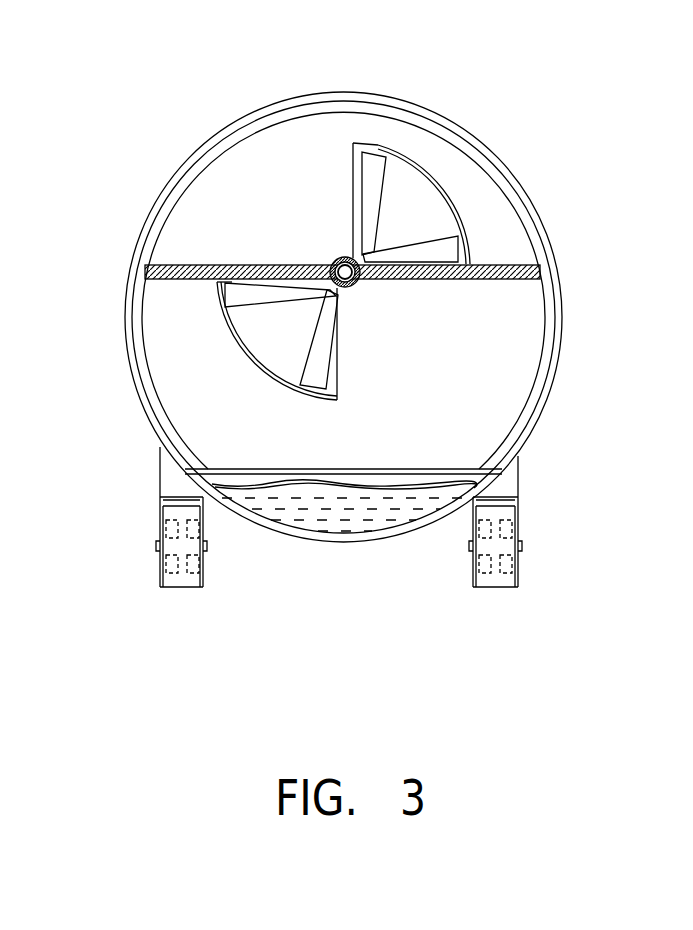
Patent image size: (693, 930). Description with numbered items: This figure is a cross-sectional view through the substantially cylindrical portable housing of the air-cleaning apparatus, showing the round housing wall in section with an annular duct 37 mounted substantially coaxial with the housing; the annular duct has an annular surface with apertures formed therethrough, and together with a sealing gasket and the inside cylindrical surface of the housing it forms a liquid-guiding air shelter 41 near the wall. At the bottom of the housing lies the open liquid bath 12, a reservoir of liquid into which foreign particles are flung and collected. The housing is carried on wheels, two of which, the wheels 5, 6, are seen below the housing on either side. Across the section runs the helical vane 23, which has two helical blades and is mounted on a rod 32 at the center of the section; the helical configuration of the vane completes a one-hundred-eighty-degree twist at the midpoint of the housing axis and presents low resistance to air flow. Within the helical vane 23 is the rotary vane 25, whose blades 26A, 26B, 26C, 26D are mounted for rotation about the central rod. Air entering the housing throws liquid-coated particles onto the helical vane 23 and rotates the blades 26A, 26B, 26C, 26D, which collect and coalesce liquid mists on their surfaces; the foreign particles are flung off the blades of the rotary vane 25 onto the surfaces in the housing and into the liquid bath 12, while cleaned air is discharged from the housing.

The wheel 5 is at (180, 578).
The wheel 6 is at (495, 583).
The liquid bath 12 is at (350, 523).
The helical vane 23 is at (400, 265).
The rotary vane 25 is at (362, 255).
The blade 26A is at (375, 165).
The blade 26B is at (448, 248).
The blade 26C is at (327, 335).
The blade 26D is at (312, 291).
The rod 32 is at (360, 278).
The annular duct 37 is at (232, 140).
The liquid-guiding air shelter 41 is at (535, 407).